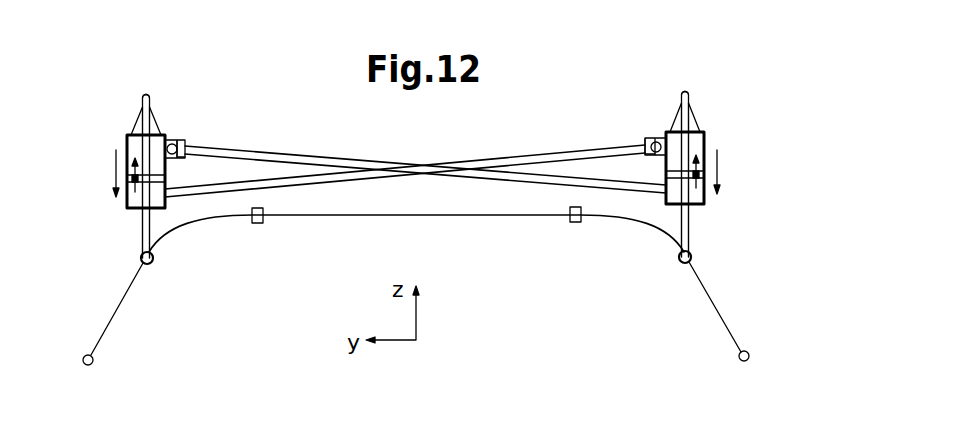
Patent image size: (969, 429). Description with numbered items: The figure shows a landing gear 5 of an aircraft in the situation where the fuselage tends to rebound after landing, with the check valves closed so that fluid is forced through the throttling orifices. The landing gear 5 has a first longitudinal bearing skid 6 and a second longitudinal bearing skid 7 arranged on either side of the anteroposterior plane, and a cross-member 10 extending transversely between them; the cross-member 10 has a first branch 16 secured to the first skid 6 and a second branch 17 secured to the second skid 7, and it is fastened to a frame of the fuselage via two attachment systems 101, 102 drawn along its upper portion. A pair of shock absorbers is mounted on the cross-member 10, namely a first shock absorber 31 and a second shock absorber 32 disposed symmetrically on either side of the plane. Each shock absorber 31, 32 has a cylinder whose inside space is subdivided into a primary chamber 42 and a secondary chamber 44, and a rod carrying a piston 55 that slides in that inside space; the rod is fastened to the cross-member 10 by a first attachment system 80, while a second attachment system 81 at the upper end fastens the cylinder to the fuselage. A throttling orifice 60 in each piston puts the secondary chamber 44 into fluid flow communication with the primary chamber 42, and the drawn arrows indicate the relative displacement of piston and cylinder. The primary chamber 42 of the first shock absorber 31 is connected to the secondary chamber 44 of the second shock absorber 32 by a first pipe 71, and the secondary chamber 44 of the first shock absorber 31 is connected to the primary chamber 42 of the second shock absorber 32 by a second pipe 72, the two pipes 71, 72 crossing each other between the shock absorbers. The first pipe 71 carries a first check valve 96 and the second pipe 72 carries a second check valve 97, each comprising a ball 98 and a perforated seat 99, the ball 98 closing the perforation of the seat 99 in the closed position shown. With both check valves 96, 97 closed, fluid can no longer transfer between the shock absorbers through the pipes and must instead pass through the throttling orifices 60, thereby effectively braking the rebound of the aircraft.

The landing gear 5 is at (691, 338).
The first longitudinal bearing skid 6 is at (83, 362).
The second longitudinal bearing skid 7 is at (748, 358).
The cross-member 10 is at (138, 312).
The first branch 16 is at (119, 299).
The second branch 17 is at (716, 297).
The first shock absorber 31 is at (130, 141).
The second shock absorber 32 is at (702, 134).
The primary chamber 42 is at (133, 147).
The secondary chamber 44 is at (127, 202).
The piston 55 is at (165, 176).
The throttling orifice 60 is at (127, 173).
The first pipe 71 is at (343, 155).
The second pipe 72 is at (498, 155).
The first attachment system 80 is at (155, 263).
The second attachment system 81 is at (146, 96).
The first check valve 96 is at (185, 142).
The second check valve 97 is at (653, 138).
The ball 98 is at (172, 140).
The perforated seat 99 is at (170, 146).
The attachment system 101 is at (257, 223).
The attachment system 102 is at (575, 222).